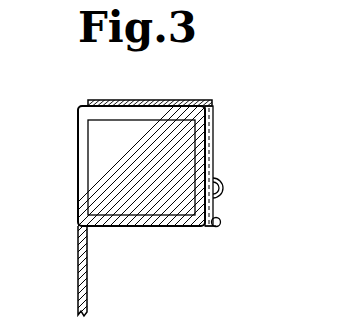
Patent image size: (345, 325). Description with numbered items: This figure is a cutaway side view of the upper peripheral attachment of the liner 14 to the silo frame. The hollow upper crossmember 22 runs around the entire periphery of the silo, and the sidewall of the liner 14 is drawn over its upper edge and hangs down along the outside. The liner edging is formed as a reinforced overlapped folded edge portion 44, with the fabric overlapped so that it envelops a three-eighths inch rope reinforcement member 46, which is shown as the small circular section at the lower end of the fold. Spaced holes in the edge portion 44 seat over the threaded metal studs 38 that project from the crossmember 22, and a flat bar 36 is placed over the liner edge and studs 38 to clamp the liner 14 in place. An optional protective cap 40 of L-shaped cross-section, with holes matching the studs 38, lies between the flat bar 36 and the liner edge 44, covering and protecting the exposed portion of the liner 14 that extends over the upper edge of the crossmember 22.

The liner 14 is at (72, 241).
The upper crossmember 22 is at (150, 228).
The flat bar 36 is at (215, 165).
The threaded metal stud 38 is at (223, 188).
The protective cap 40 is at (181, 102).
The reinforced overlapped folded edge portion 44 is at (221, 222).
The rope reinforcement member 46 is at (214, 227).